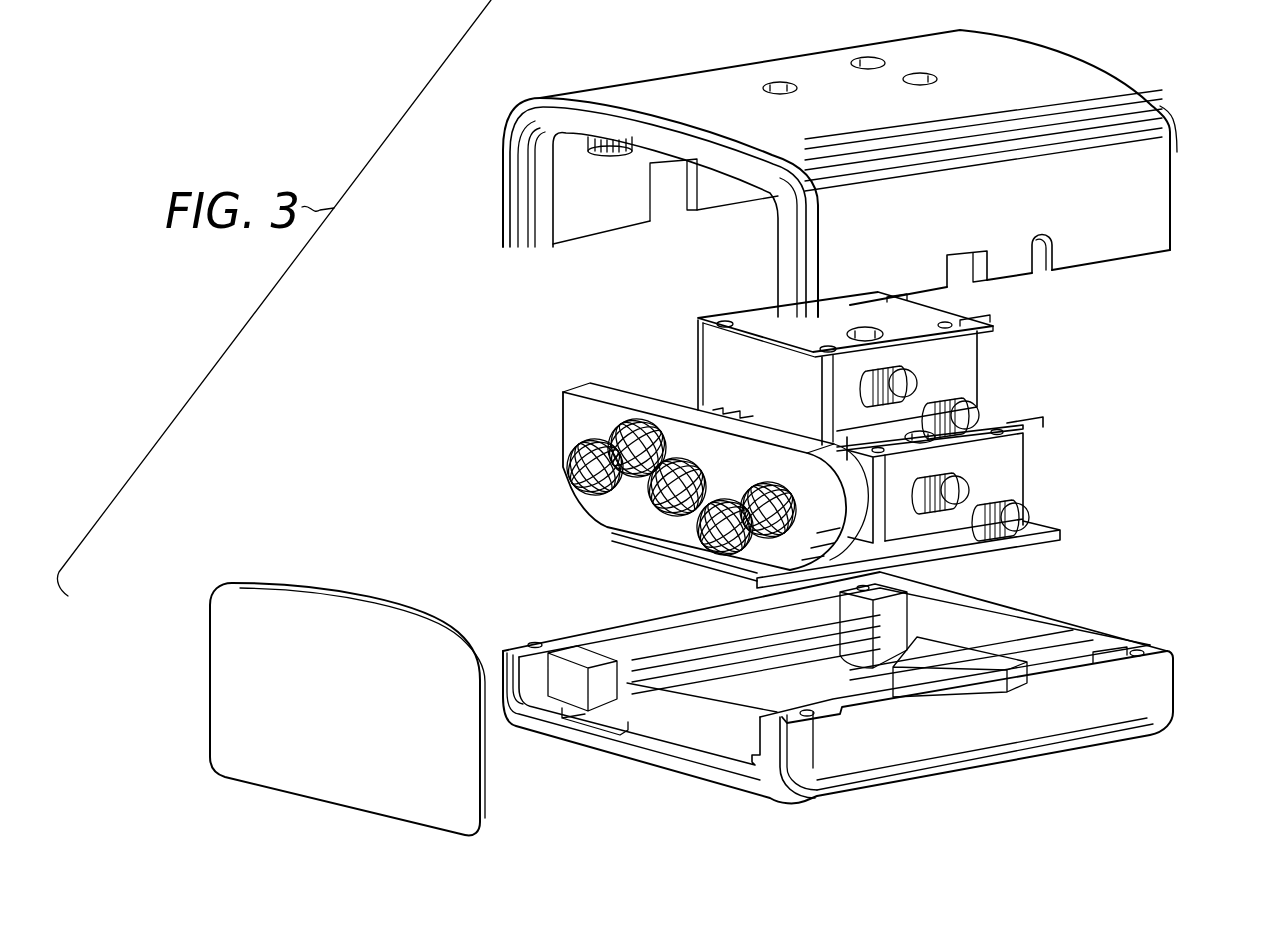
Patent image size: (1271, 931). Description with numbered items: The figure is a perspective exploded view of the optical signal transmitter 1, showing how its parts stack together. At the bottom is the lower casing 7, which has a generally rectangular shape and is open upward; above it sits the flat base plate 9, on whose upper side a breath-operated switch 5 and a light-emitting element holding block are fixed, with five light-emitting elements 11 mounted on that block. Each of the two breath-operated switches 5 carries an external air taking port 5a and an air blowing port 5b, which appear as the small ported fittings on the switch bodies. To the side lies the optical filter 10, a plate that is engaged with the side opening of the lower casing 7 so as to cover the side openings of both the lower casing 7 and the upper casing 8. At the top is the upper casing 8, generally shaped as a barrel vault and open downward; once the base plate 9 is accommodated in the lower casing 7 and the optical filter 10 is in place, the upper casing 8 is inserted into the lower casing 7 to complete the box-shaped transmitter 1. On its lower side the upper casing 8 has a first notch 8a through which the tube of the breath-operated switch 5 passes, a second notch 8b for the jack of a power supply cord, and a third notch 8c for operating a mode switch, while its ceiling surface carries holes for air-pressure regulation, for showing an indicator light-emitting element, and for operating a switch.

The optical signal transmitter 1 is at (653, 323).
The breath-operated switch 5 is at (1043, 444).
The external air taking port 5a is at (917, 375).
The air blowing port 5b is at (972, 398).
The lower casing 7 is at (1173, 676).
The upper casing 8 is at (1176, 233).
The first notch 8a is at (1040, 270).
The second notch 8b is at (960, 279).
The third notch 8c is at (675, 194).
The base plate 9 is at (1063, 533).
The optical filter 10 is at (487, 805).
The light-emitting elements 11 is at (575, 455).